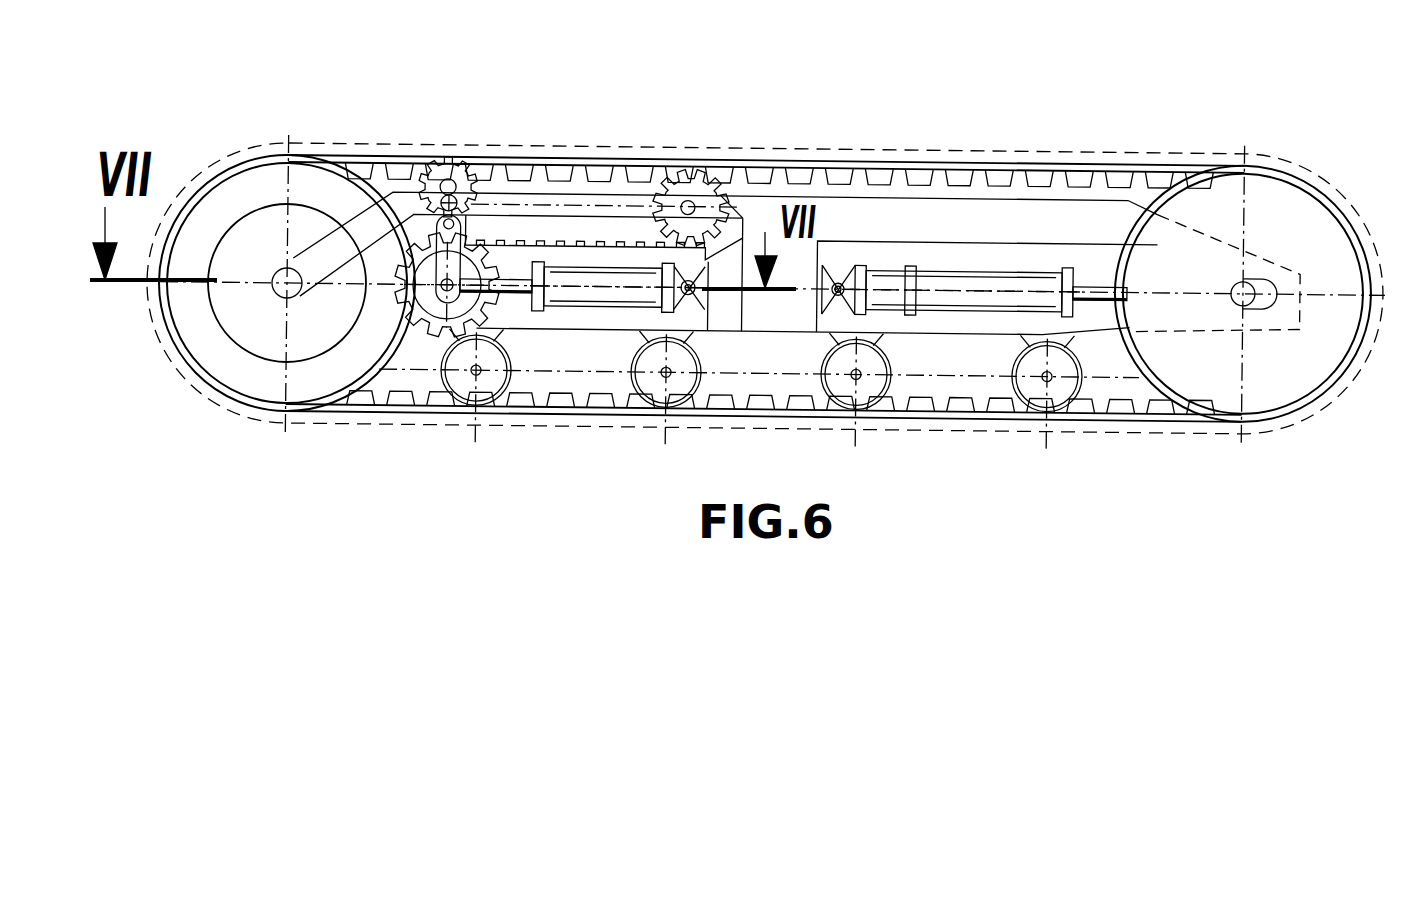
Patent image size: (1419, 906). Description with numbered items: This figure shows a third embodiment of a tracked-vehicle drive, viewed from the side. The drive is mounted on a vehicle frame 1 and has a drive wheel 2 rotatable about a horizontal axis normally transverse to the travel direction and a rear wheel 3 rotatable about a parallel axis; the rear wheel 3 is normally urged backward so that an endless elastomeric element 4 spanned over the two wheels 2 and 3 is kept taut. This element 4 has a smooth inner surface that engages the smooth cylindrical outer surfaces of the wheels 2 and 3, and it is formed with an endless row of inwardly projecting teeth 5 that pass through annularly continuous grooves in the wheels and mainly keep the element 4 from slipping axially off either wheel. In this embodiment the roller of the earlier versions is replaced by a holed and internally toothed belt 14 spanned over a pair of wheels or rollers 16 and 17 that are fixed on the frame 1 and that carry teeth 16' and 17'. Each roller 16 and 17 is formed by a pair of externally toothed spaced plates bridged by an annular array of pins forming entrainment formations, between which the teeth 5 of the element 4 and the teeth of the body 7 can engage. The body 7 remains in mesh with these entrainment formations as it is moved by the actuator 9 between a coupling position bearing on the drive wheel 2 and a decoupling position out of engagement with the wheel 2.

The vehicle frame 1 is at (778, 210).
The drive wheel 2 is at (290, 216).
The rear wheel 3 is at (1270, 372).
The endless elastomeric element 4 is at (1043, 162).
The teeth 5 is at (944, 180).
The body 7 is at (433, 312).
The actuator 9 is at (615, 293).
The holed and internally toothed belt 14 is at (583, 185).
The roller 16 is at (450, 141).
The teeth 16' is at (489, 164).
The roller 17 is at (690, 158).
The teeth 17' is at (760, 121).